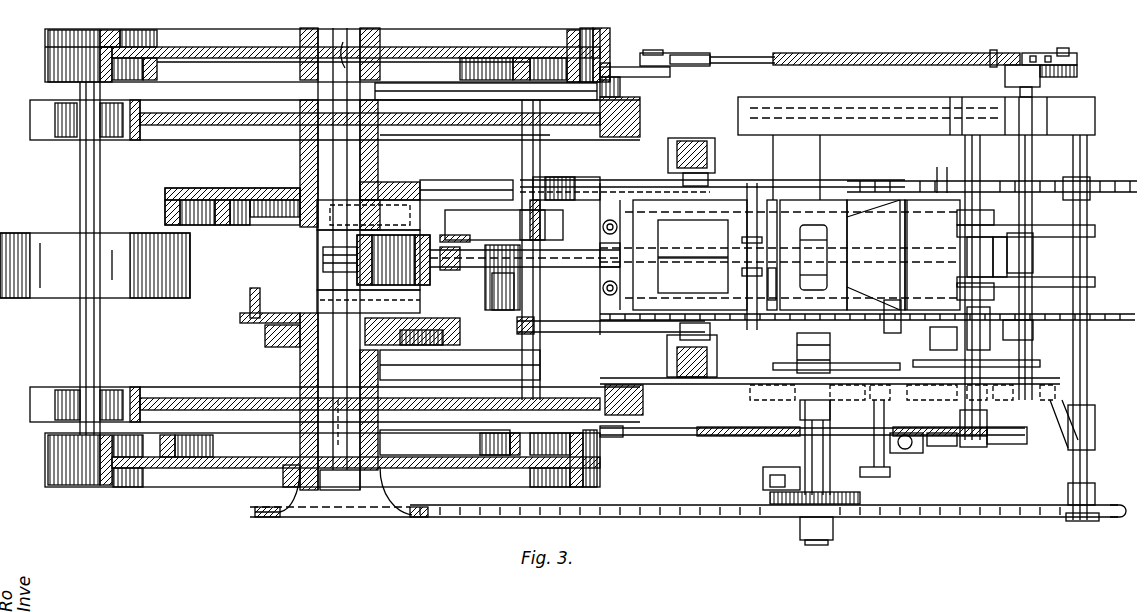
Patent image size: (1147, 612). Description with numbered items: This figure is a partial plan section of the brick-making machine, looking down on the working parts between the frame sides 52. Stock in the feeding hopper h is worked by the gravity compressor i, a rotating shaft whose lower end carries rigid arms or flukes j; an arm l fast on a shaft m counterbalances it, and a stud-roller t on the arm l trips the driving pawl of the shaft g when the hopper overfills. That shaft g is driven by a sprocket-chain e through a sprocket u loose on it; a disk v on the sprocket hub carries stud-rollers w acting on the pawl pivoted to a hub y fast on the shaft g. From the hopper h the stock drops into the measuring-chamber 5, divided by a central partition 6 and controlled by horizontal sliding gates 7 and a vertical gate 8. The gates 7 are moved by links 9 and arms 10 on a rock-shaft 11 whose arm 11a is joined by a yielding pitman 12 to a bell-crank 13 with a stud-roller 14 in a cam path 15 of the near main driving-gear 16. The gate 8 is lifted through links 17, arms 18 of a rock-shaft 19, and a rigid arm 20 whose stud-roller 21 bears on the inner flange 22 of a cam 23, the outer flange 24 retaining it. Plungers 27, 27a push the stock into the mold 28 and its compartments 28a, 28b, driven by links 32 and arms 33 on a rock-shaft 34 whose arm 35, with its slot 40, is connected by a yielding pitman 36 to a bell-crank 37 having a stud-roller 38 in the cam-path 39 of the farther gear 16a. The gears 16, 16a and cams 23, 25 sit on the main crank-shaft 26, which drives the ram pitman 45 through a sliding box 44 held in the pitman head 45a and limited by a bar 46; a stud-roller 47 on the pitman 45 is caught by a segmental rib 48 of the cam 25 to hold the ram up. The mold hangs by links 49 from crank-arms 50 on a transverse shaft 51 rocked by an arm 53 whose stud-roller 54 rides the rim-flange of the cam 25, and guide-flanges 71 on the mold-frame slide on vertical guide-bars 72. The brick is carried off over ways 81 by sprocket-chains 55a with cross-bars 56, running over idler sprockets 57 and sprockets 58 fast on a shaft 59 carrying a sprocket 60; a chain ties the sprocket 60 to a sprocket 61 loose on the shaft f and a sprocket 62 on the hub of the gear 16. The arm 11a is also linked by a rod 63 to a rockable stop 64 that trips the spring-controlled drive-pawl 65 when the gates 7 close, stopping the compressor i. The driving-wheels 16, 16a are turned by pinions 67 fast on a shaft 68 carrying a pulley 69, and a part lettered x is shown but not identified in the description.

The rack bar 5 is at (768, 366).
The roller 6 is at (743, 272).
The frame plate 7 is at (932, 255).
The guide block 8 is at (776, 283).
The slide block 9 is at (980, 254).
The feed rack 10 is at (933, 188).
The post 11 is at (968, 165).
The bar 11a is at (993, 445).
The threaded rod 12 is at (812, 440).
The housing 13 is at (450, 442).
The shaft end 14 is at (338, 492).
The gear 15 is at (530, 448).
The lower beam 16 is at (322, 458).
The upper beam 16a is at (214, 40).
The roller rod 17 is at (745, 238).
The bar 18 is at (612, 193).
The gear 19 is at (556, 180).
The block 20 is at (563, 226).
The housing 21 is at (368, 216).
The gear 22 is at (216, 224).
The frame 23 is at (339, 196).
The bearing 24 is at (165, 214).
The bracket 25 is at (270, 340).
The main shaft 26 is at (336, 32).
The slide 27 is at (1008, 257).
The slide bar 27a is at (1095, 280).
The carriage 28 is at (690, 255).
The upper compartment 28a is at (693, 238).
The lower compartment 28b is at (693, 275).
The block 32 is at (1033, 257).
The cross bar 33 is at (1095, 230).
The post 34 is at (1033, 160).
The clamp block 35 is at (1048, 72).
The threaded rod 36 is at (830, 50).
The plate 37 is at (620, 66).
The key 38 is at (345, 65).
The gear 39 is at (123, 55).
The nut 40 is at (1063, 48).
The housing 44 is at (388, 292).
The shaft 45 is at (570, 268).
The spool 45a is at (320, 242).
The bearing 46 is at (318, 265).
The gear 47 is at (487, 295).
The bracket 48 is at (270, 305).
The block 49 is at (700, 190).
The rod 50 is at (651, 180).
The post 51 is at (527, 166).
The arm 52 is at (218, 118).
The housing 53 is at (460, 367).
The block 54 is at (398, 345).
The bar 55a is at (907, 193).
The block 56 is at (463, 238).
The lever 57 is at (263, 210).
The bar 58 is at (1138, 196).
The shaft 59 is at (1088, 380).
The bushing 60 is at (1114, 519).
The cap 61 is at (833, 522).
The base bracket 62 is at (341, 505).
The block 63 is at (945, 447).
The knob 64 is at (905, 455).
The bracket 65 is at (777, 467).
The gear 67 is at (50, 62).
The shaft 68 is at (103, 258).
The drum 69 is at (95, 265).
The bracket 71 is at (708, 152).
The block 72 is at (688, 142).
The shaft 81 is at (1063, 175).
The roller e is at (836, 353).
The gear f is at (816, 541).
The lever g is at (965, 450).
The plate h is at (877, 255).
The arm i is at (810, 215).
The arm j is at (822, 220).
The link l is at (903, 320).
The rod m is at (893, 343).
The lever t is at (960, 310).
The link u is at (1040, 362).
The link v is at (990, 338).
The pin w is at (920, 307).
The pin x is at (883, 282).
The shaft y is at (830, 472).